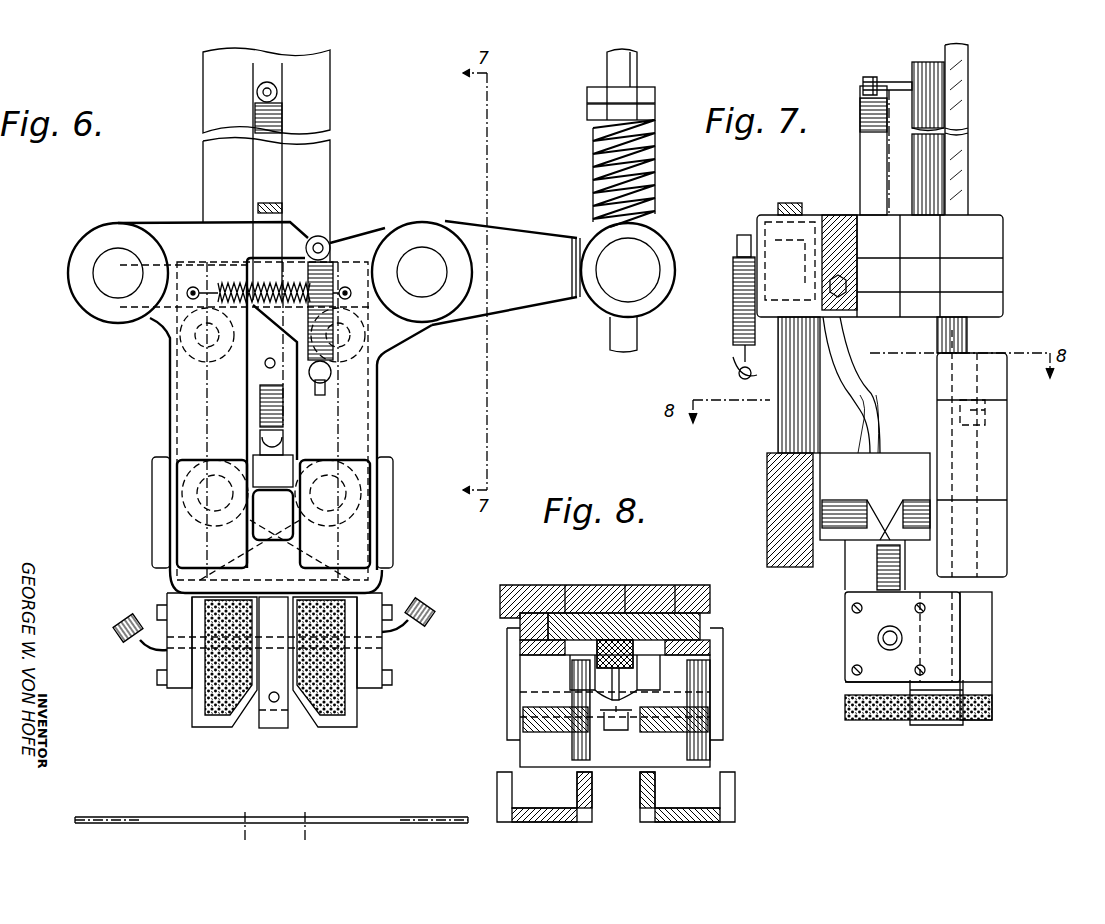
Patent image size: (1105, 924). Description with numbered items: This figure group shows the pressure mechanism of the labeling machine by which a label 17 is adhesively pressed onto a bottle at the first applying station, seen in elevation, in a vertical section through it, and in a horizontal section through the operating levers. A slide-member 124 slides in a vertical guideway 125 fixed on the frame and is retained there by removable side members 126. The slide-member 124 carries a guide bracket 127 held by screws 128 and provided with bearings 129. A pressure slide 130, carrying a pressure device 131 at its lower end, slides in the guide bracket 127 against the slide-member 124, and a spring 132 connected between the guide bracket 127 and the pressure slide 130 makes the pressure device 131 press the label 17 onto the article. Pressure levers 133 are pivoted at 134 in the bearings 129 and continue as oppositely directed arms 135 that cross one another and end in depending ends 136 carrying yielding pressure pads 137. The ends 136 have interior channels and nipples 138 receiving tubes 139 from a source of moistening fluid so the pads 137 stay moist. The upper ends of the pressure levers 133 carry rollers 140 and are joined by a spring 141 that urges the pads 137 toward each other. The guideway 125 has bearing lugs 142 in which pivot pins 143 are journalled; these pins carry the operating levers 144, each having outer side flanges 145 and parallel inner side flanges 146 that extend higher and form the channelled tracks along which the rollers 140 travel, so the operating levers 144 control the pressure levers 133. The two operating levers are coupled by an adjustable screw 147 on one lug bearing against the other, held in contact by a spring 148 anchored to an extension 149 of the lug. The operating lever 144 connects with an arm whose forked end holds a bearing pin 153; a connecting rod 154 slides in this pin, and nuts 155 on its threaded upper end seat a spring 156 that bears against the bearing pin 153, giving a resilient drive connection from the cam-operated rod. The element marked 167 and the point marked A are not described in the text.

In FIG. 6, the slide-member 124 is at (318, 194).
In FIG. 7, the slide-member 124 is at (960, 160).
In FIG. 8, the slide-member 124 is at (672, 600).
In FIG. 7, the vertical guideway 125 is at (990, 470).
In FIG. 8, the vertical guideway 125 is at (705, 605).
In FIG. 8, the side members 126 is at (572, 590).
In FIG. 6, the guide bracket 127 is at (278, 472).
In FIG. 7, the guide bracket 127 is at (930, 440).
In FIG. 8, the guide bracket 127 is at (597, 652).
In FIG. 8, the screws 128 is at (628, 590).
In FIG. 7, the bearings 129 is at (822, 470).
In FIG. 8, the bearings 129 is at (530, 678).
In FIG. 6, the pressure slide 130 is at (262, 72).
In FIG. 7, the pressure slide 130 is at (935, 97).
In FIG. 8, the pressure slide 130 is at (640, 660).
In FIG. 6, the pressure device 131 is at (277, 720).
In FIG. 7, the pressure device 131 is at (935, 728).
In FIG. 6, the spring 132 is at (258, 124).
In FIG. 7, the spring 132 is at (860, 168).
In FIG. 8, the spring 132 is at (607, 724).
In FIG. 7, the pressure levers 133 is at (851, 385).
In FIG. 7, the pivot 134 is at (822, 508).
In FIG. 7, the oppositely directed arms 135 is at (880, 572).
In FIG. 7, the depending ends 136 is at (856, 650).
In FIG. 6, the pressure pads 137 is at (240, 707).
In FIG. 7, the pressure pads 137 is at (868, 716).
In FIG. 6, the nipples 138 is at (396, 654).
In FIG. 6, the tubes 139 is at (120, 642).
In FIG. 7, the tubes 139 is at (878, 636).
In FIG. 7, the rollers 140 is at (742, 372).
In FIG. 7, the spring 141 is at (848, 286).
In FIG. 6, the bearing lugs 142 is at (150, 325).
In FIG. 7, the bearing lugs 142 is at (880, 266).
In FIG. 6, the pivot pins 143 is at (112, 258).
In FIG. 6, the operating lever 144 is at (185, 435).
In FIG. 7, the operating lever 144 is at (778, 444).
In FIG. 8, the operating lever 144 is at (547, 808).
In FIG. 6, the outer side flanges 145 is at (155, 498).
In FIG. 7, the outer side flanges 145 is at (770, 512).
In FIG. 8, the outer side flanges 145 is at (500, 792).
In FIG. 8, the inner side flanges 146 is at (600, 793).
In FIG. 6, the screw 147 is at (257, 208).
In FIG. 7, the screw 147 is at (786, 203).
In FIG. 6, the spring 148 is at (330, 268).
In FIG. 7, the spring 148 is at (735, 348).
In FIG. 6, the extension 149 is at (325, 237).
In FIG. 6, the bearing pin 153 is at (648, 262).
In FIG. 6, the connecting rod 154 is at (616, 336).
In FIG. 6, the nuts 155 is at (590, 113).
In FIG. 6, the spring 156 is at (596, 157).
In FIG. 6, the strip 167 is at (126, 787).
In FIG. 6, the labels 17 is at (350, 816).
In FIG. 6, the strip section A is at (292, 816).